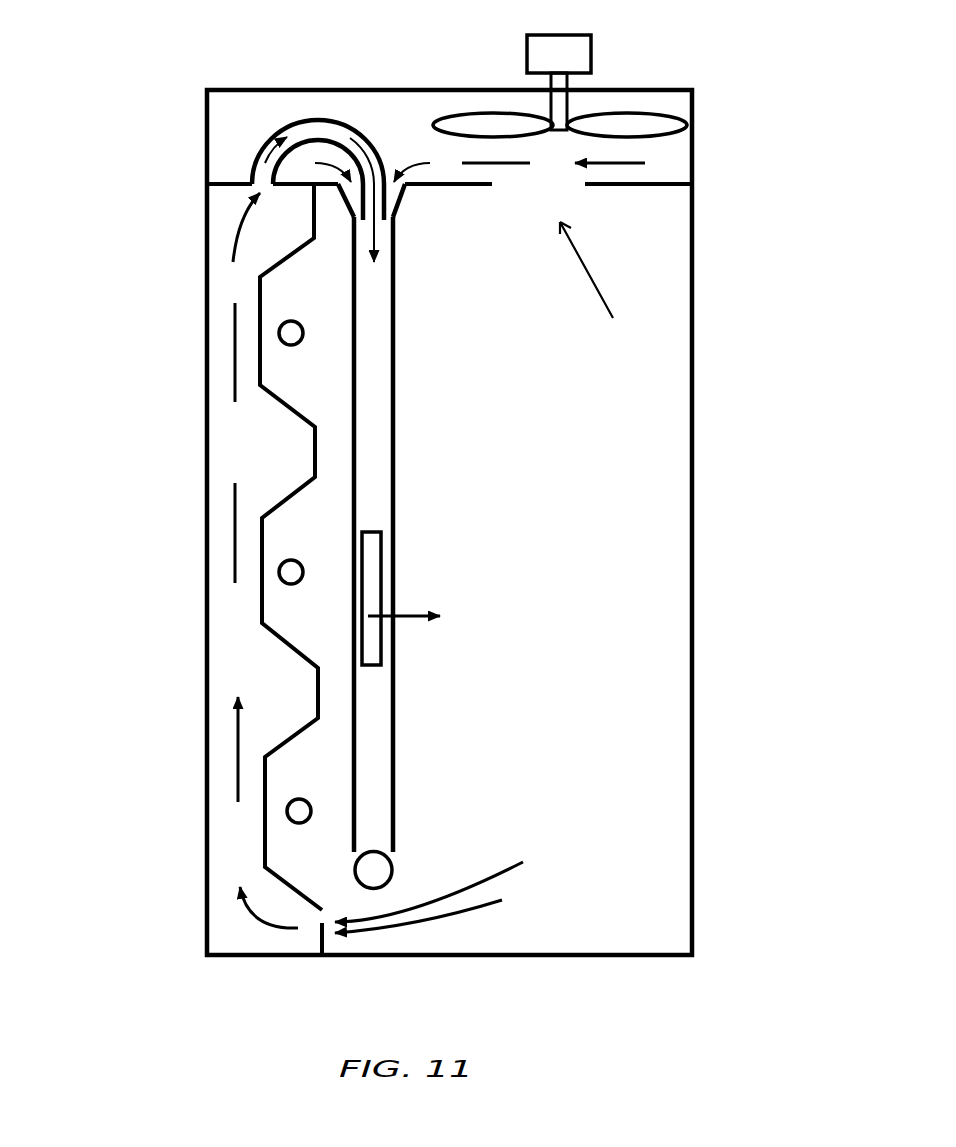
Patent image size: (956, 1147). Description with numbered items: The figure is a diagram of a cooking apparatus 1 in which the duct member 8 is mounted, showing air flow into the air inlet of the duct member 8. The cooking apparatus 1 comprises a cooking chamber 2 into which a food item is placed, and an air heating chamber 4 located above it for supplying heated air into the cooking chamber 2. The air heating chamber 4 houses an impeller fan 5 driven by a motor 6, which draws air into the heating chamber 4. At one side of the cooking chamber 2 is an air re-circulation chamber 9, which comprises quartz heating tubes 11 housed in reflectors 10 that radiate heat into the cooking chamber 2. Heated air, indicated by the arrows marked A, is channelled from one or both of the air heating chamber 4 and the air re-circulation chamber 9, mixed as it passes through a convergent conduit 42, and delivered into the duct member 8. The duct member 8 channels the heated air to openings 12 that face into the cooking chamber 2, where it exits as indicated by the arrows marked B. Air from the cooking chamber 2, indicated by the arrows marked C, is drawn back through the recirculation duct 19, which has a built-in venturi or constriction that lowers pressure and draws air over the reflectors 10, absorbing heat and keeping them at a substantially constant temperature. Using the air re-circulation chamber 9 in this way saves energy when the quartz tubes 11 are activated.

The cooking apparatus 1 is at (165, 151).
The cooking chamber 2 is at (693, 883).
The air heating chamber 4 is at (351, 100).
The impeller fan 5 is at (462, 118).
The motor 6 is at (570, 52).
The duct member 8 is at (393, 782).
The air re-circulation chamber 9 is at (207, 435).
The reflectors 10 is at (262, 623).
The quartz heating tubes 11 is at (279, 572).
The openings 12 is at (352, 632).
The recirculation duct 19 is at (272, 132).
The convergent conduit 42 is at (395, 213).